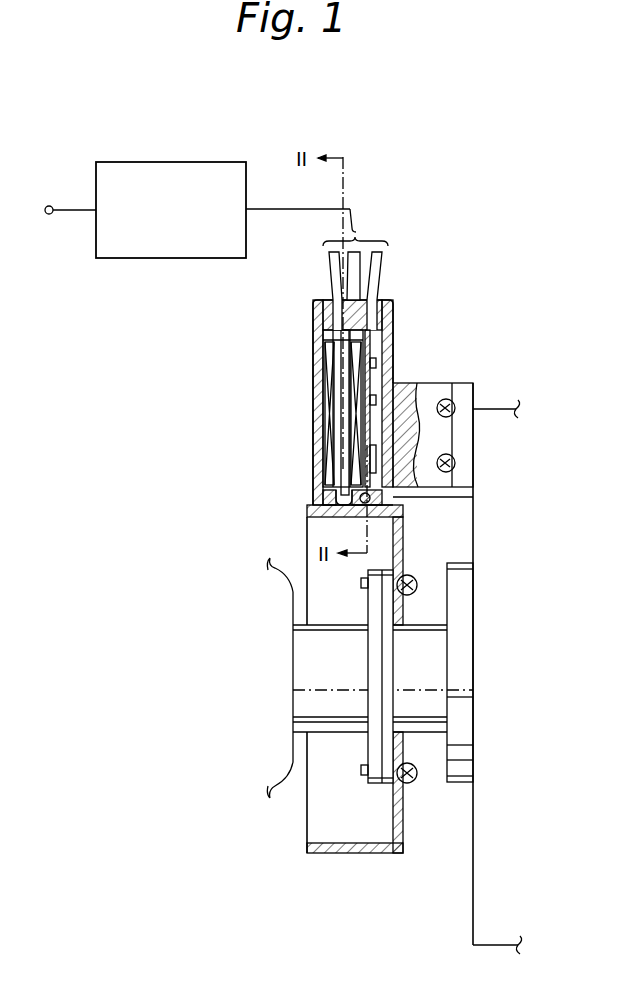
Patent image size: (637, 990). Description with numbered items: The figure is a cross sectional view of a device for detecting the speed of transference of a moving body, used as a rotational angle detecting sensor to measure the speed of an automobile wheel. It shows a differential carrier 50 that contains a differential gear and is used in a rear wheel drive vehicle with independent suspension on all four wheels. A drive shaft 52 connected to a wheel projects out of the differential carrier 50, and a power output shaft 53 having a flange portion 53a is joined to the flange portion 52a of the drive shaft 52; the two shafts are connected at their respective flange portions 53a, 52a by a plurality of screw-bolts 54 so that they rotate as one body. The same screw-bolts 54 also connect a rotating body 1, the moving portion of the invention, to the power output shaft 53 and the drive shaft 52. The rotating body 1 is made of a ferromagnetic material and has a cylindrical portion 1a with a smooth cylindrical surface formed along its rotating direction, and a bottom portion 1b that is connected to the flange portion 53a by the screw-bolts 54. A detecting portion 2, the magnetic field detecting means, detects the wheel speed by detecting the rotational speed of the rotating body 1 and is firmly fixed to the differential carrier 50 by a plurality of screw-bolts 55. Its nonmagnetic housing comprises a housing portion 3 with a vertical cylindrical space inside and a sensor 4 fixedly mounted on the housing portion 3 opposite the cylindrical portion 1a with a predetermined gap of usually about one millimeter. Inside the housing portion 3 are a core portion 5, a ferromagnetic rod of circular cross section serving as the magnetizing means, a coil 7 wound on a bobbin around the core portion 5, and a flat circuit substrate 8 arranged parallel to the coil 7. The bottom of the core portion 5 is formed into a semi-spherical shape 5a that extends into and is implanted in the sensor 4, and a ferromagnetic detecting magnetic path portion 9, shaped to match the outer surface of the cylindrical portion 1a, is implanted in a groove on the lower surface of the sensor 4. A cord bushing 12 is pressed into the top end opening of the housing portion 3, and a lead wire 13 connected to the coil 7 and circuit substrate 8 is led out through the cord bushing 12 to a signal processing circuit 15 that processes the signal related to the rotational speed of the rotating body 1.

The rotating body 1 is at (348, 868).
The cylindrical portion 1a is at (376, 853).
The bottom portion 1b is at (401, 828).
The detecting portion 2 is at (306, 306).
The housing portion 3 is at (318, 410).
The sensor 4 is at (322, 499).
The core portion 5 is at (340, 430).
The semi-spherical shape 5a is at (338, 506).
The coil 7 is at (330, 360).
The circuit substrate 8 is at (376, 356).
The detecting magnetic path portion 9 is at (397, 498).
The cord bushing 12 is at (384, 300).
The lead wire 13 is at (373, 270).
The signal processing circuit 15 is at (175, 162).
The differential carrier 50 is at (500, 427).
The drive shaft 52 is at (307, 698).
The flange portion 52a is at (376, 642).
The power output shaft 53 is at (440, 724).
The flange portion 53a is at (388, 698).
The screw-bolts 54 is at (410, 782).
The screw-bolts 55 is at (448, 407).